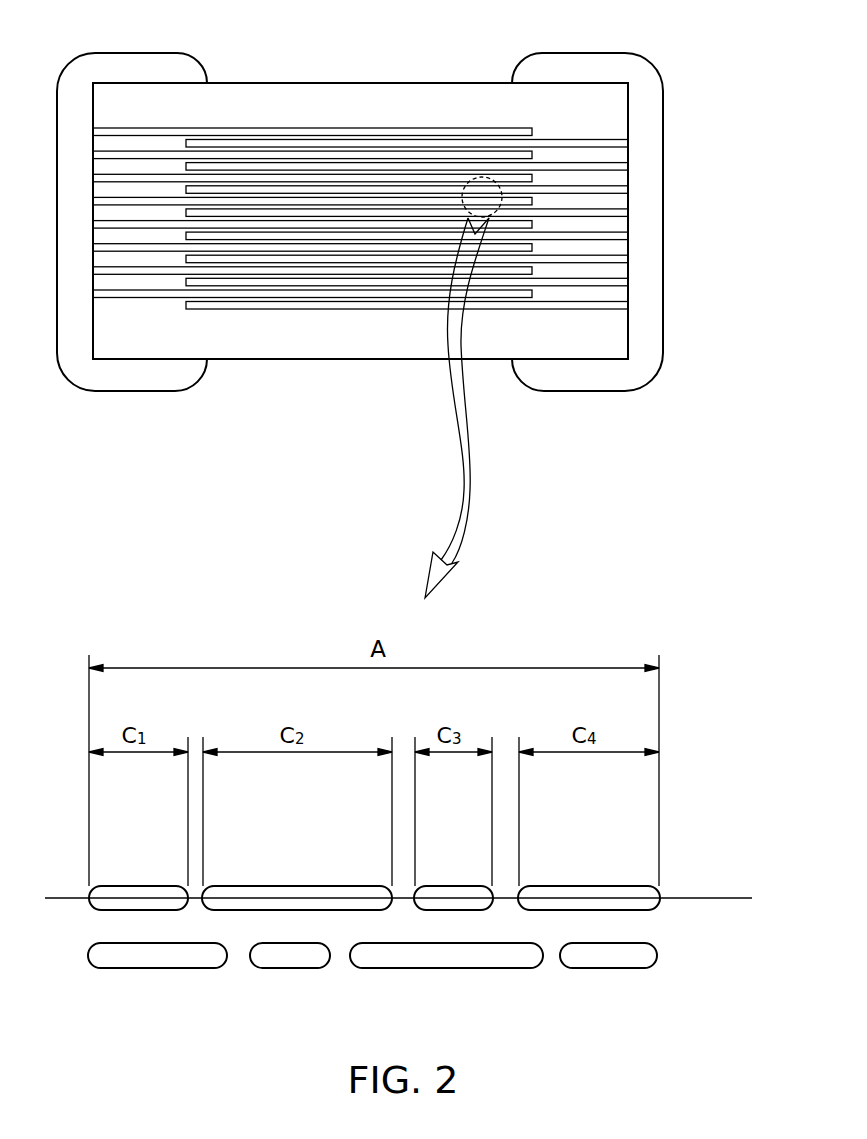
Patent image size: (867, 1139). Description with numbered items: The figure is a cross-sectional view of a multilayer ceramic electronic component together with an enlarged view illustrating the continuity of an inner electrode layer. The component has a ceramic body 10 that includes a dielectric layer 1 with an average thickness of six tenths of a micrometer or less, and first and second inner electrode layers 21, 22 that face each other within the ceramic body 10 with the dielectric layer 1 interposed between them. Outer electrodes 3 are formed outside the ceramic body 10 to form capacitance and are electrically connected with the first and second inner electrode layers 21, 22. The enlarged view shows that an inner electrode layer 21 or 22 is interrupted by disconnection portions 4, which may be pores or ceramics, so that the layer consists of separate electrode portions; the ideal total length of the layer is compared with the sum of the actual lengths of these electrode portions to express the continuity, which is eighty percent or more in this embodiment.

The dielectric layer 1 is at (607, 202).
The outer electrodes 3 is at (138, 382).
The disconnection portions 4 is at (504, 902).
The ceramic body 10 is at (363, 345).
The first inner electrode layer 21 is at (538, 189).
The second inner electrode layer 22 is at (530, 200).